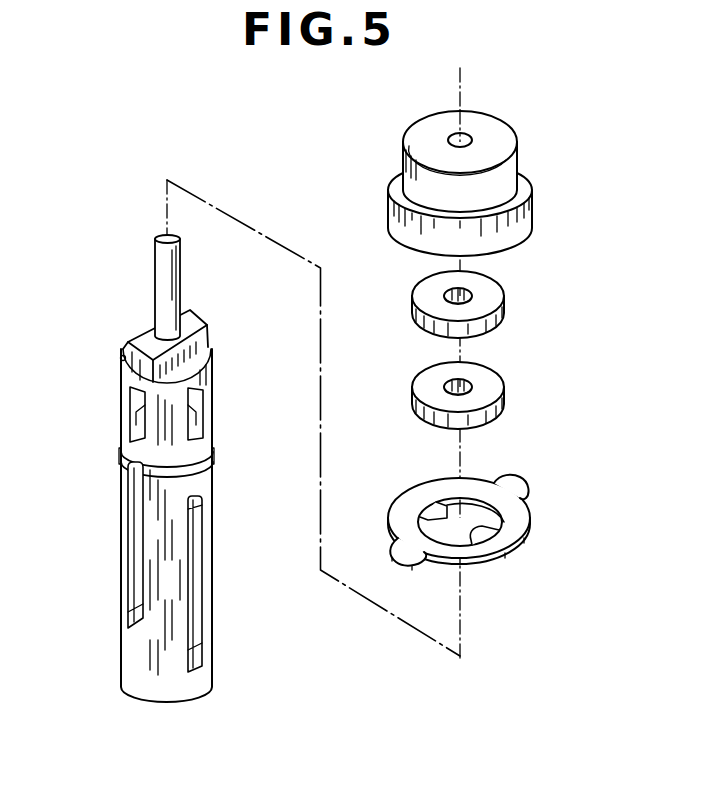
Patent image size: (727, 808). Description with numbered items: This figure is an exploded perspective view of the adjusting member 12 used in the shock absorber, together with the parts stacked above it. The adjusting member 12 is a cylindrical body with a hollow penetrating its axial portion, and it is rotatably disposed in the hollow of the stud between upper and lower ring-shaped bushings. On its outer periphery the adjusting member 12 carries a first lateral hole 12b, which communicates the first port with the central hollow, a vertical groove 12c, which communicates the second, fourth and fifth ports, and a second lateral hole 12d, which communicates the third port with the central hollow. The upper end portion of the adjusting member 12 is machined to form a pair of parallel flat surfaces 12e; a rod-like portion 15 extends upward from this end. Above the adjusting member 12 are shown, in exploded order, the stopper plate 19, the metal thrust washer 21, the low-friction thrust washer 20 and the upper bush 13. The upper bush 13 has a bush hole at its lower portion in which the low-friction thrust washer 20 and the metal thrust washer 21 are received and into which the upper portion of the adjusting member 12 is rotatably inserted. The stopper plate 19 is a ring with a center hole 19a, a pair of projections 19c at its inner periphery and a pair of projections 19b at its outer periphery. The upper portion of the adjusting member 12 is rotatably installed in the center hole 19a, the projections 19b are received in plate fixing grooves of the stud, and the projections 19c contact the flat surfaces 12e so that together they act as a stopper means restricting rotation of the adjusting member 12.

The adjusting member 12 is at (120, 373).
The first lateral hole 12b is at (137, 416).
The vertical groove 12c is at (135, 535).
The second lateral hole 12d is at (192, 548).
The flat surfaces 12e is at (196, 316).
The upper bush 13 is at (524, 153).
The shaft 15 is at (158, 263).
The stopper plate 19 is at (398, 493).
The center hole 19a is at (477, 500).
The projections 19b is at (512, 490).
The projections 19c is at (441, 504).
The low-friction thrust washer 20 is at (490, 298).
The metal thrust washer 21 is at (490, 388).